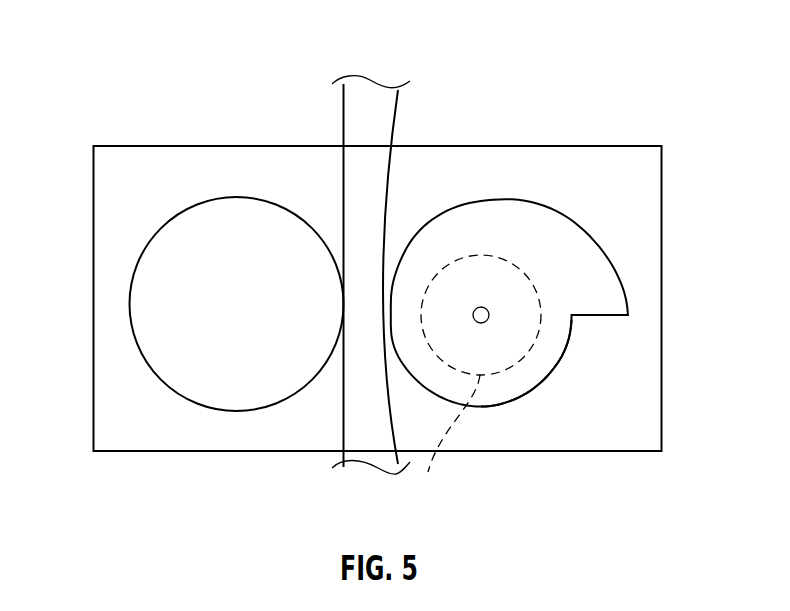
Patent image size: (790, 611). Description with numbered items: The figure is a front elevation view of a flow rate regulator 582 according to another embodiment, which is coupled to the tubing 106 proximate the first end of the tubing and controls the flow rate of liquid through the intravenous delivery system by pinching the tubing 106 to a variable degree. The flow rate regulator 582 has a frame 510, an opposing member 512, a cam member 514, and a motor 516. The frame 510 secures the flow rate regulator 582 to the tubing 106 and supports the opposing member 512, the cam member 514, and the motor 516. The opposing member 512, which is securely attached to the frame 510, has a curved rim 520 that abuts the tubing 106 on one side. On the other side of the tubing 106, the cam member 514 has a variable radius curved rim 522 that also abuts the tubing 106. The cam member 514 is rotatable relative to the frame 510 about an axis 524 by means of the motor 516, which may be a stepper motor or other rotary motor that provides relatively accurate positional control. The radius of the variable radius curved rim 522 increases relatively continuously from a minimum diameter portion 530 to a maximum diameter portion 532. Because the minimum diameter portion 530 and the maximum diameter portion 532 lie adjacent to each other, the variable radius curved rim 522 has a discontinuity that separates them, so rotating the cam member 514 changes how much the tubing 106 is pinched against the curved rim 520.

The flow rate regulator 582 is at (121, 41).
The tubing 106 is at (353, 116).
The frame 510 is at (635, 185).
The opposing member 512 is at (117, 426).
The cam member 514 is at (524, 416).
The motor 516 is at (443, 439).
The curved rim 520 is at (130, 304).
The variable radius curved rim 522 is at (546, 199).
The axis 524 is at (481, 307).
The minimum diameter portion 530 is at (563, 357).
The maximum diameter portion 532 is at (627, 300).